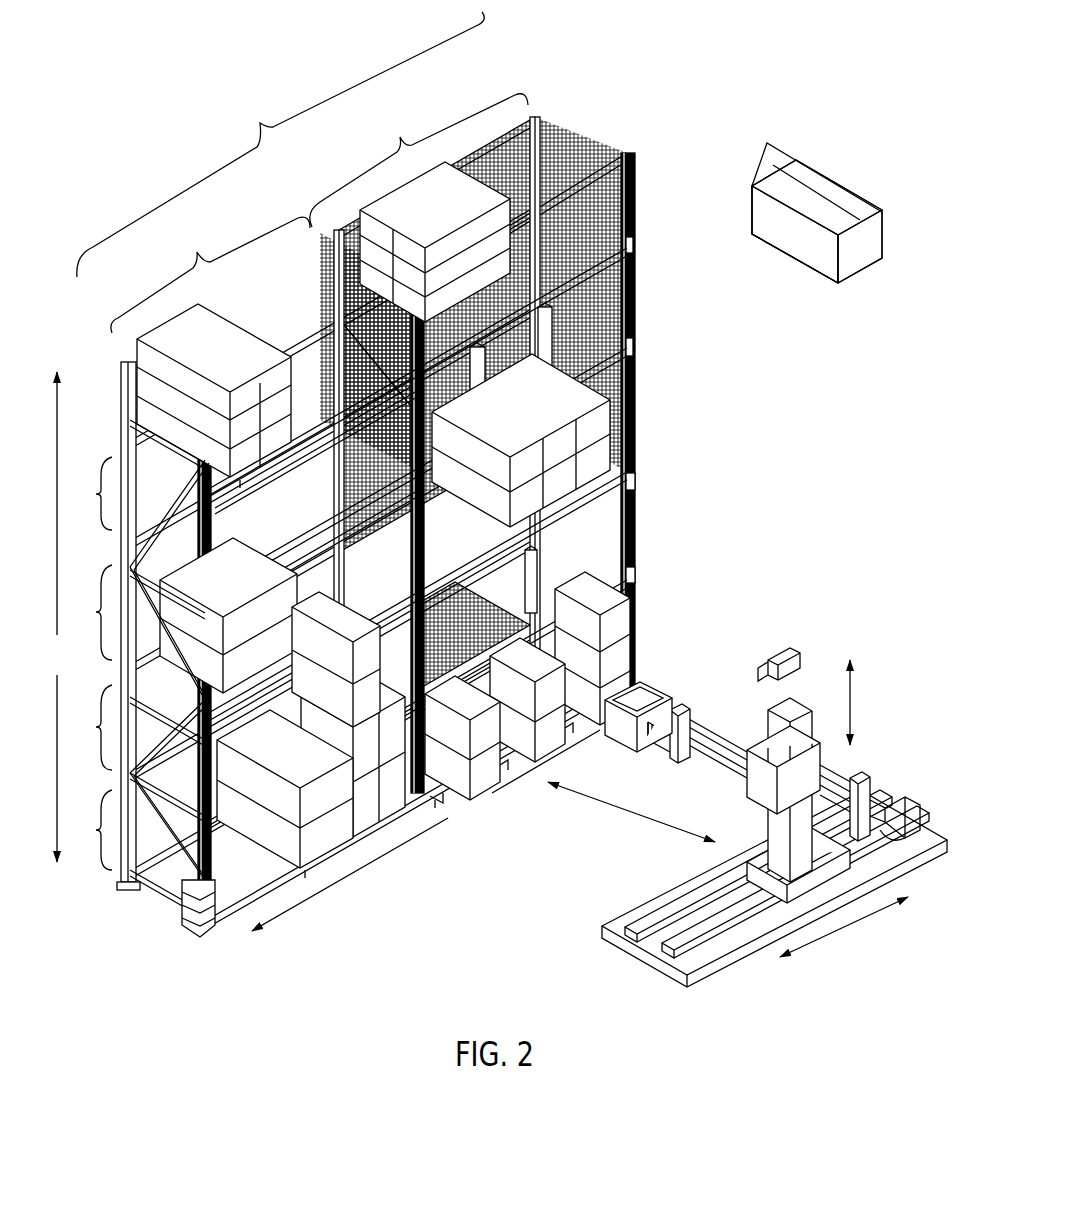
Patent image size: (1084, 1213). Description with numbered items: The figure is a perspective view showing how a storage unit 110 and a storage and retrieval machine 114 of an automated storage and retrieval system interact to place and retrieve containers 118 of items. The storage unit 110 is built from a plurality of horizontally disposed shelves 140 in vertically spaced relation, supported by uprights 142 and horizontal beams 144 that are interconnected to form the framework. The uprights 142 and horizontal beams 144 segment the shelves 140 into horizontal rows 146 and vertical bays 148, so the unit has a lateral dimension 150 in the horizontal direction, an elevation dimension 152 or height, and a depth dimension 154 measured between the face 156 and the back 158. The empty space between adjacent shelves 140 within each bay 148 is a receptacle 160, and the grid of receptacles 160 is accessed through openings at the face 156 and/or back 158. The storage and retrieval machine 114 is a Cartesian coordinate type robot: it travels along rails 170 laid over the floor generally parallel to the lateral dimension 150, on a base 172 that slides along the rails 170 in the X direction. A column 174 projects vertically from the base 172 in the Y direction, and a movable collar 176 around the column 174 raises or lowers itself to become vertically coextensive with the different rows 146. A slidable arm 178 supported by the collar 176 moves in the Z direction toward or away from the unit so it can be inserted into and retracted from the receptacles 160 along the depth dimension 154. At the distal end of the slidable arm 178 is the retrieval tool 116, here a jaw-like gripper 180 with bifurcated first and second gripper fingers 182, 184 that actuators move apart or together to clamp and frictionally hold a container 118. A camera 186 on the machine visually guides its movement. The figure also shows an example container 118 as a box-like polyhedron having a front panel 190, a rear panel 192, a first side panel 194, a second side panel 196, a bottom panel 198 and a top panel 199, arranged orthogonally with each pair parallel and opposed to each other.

The storage unit 110 is at (501, 474).
The storage and retrieval machine 114 is at (751, 763).
The retrieval tool 116 is at (677, 766).
The container 118 is at (548, 465).
The shelf 140 is at (454, 588).
The upright 142 is at (350, 468).
The horizontal beam 144 is at (410, 498).
The horizontal row 146 is at (136, 669).
The vertical bay 148 is at (319, 213).
The lateral dimension 150 is at (426, 830).
The elevation dimension 152 is at (57, 617).
The depth dimension 154 is at (161, 908).
The face 156 is at (535, 334).
The back 158 is at (335, 309).
The receptacle 160 is at (400, 529).
The rail 170 is at (772, 888).
The base 172 is at (850, 869).
The column 174 is at (802, 761).
The movable collar 176 is at (773, 738).
The slidable arm 178 is at (803, 752).
The gripper 180 is at (676, 689).
The first gripper finger 182 is at (642, 663).
The second gripper finger 184 is at (638, 712).
The camera 186 is at (788, 637).
The front panel 190 is at (897, 246).
The rear panel 192 is at (714, 203).
The first side panel 194 is at (773, 234).
The second side panel 196 is at (855, 192).
The bottom panel 198 is at (795, 289).
The top panel 199 is at (794, 161).